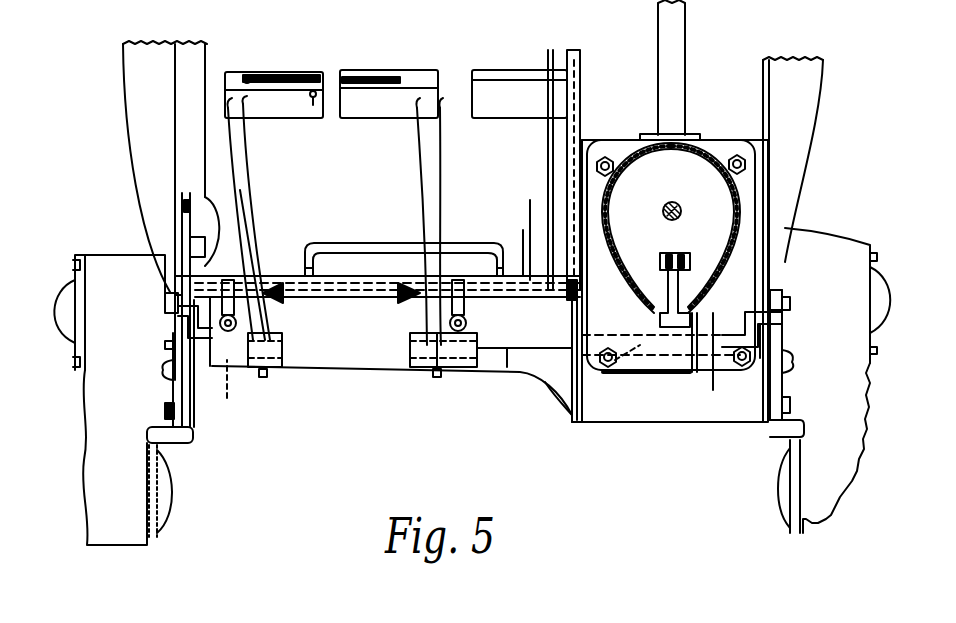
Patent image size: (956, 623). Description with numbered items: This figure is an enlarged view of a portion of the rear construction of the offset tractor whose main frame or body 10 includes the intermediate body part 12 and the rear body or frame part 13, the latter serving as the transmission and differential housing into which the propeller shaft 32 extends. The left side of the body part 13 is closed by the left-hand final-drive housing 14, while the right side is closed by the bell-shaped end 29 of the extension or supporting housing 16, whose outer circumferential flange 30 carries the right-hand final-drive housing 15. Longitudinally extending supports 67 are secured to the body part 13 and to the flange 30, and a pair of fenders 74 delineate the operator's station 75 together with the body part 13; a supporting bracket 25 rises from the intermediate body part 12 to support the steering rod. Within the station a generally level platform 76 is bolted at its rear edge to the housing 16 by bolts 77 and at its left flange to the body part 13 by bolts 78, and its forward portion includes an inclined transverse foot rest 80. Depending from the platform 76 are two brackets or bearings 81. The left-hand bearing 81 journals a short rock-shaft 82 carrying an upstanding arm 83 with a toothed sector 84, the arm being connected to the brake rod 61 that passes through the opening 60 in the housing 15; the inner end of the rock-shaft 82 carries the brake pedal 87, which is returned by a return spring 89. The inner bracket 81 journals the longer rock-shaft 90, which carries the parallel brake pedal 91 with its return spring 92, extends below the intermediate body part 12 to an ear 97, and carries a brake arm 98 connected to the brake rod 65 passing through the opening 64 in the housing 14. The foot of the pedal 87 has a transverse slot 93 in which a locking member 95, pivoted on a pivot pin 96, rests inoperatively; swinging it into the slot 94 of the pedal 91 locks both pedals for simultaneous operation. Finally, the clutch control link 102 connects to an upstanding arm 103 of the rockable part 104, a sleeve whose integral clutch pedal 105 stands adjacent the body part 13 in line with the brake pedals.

The main frame or body 10 is at (712, 152).
The intermediate body part 12 is at (628, 155).
The rear body or frame part 13 is at (618, 425).
The left-hand final-drive housing 14 is at (828, 502).
The right-hand final-drive housing 15 is at (103, 535).
The extension or supporting housing 16 is at (347, 366).
The supporting bracket 25 is at (686, 25).
The bell-shaped end 29 is at (203, 198).
The circumferential flange 30 is at (193, 447).
The propeller shaft 32 is at (673, 202).
The opening 60 is at (165, 367).
The brake rod 61 is at (164, 347).
The opening 64 is at (794, 366).
The brake rod 65 is at (780, 335).
The supports 67 is at (186, 47).
The fenders 74 is at (134, 120).
The operator's station 75 is at (273, 255).
The platform 76 is at (337, 276).
The bolts 77 is at (523, 276).
The bolts 78 is at (552, 409).
The foot rest 80 is at (388, 243).
The brackets or bearings 81 is at (242, 367).
The rock-shaft 82 is at (230, 396).
The upstanding arm 83 is at (172, 332).
The sector 84 is at (207, 252).
The brake pedal 87 is at (252, 190).
The return spring 89 is at (277, 300).
The rock-shaft 90 is at (508, 350).
The brake pedal 91 is at (431, 190).
The return spring 92 is at (399, 311).
The transverse slot 93 is at (247, 77).
The slot 94 is at (380, 78).
The locking member 95 is at (300, 76).
The pivot pin 96 is at (313, 99).
The ear 97 is at (707, 375).
The brake arm 98 is at (790, 257).
The control element or link 102 is at (688, 250).
The upstanding arm 103 is at (678, 245).
The rockable part 104 is at (625, 375).
The clutch pedal 105 is at (552, 140).